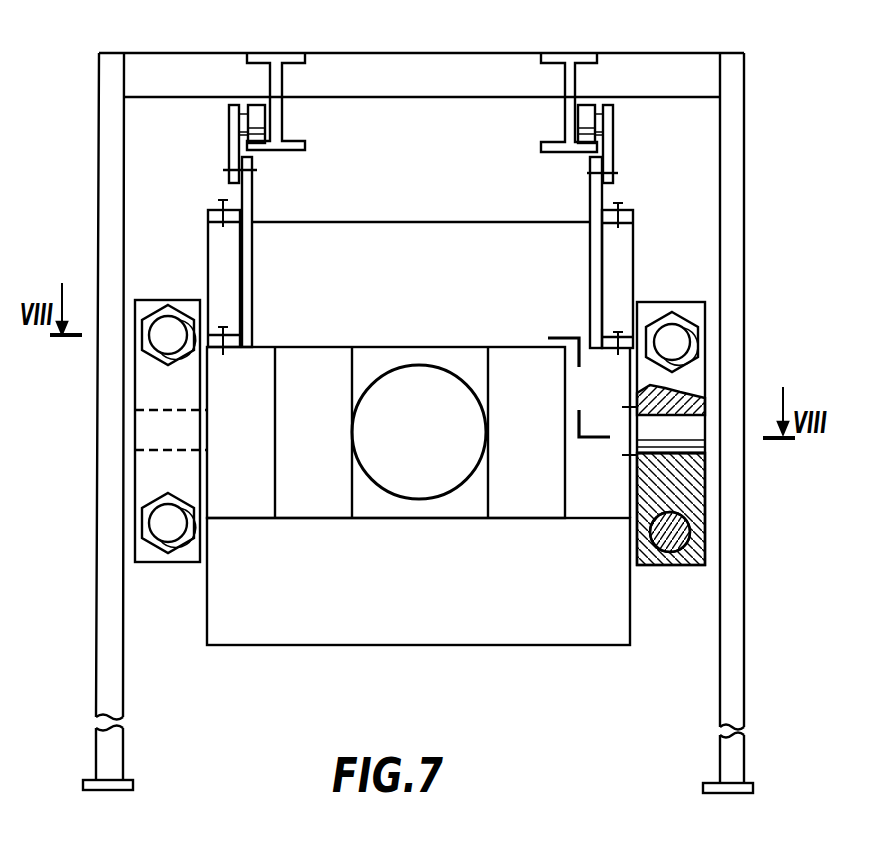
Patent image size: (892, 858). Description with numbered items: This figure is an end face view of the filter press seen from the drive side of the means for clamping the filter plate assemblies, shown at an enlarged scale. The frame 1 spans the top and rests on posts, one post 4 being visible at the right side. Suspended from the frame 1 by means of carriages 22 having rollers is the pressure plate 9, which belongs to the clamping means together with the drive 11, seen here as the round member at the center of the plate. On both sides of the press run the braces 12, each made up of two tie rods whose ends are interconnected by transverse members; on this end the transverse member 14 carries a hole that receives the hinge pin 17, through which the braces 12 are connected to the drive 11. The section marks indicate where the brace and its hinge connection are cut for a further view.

The frame 1 is at (551, 56).
The carriage 22 is at (235, 117).
The brace 12 is at (150, 318).
The drive 11 is at (393, 483).
The pressure plate 9 is at (240, 634).
The post 4 is at (720, 695).
The hinge pin 17 is at (692, 432).
The transverse member 14 is at (685, 504).